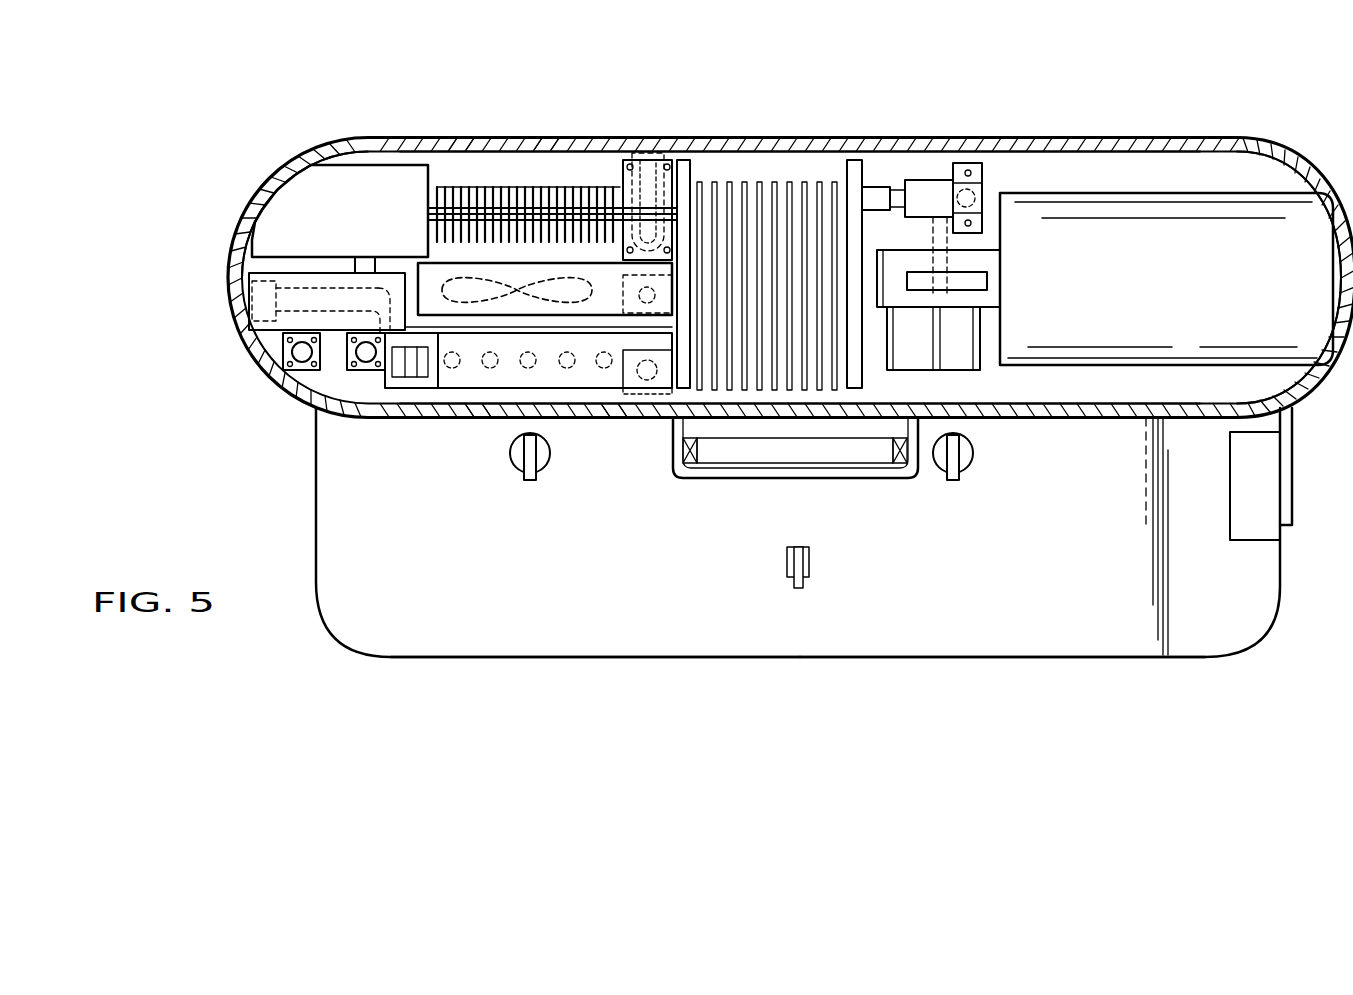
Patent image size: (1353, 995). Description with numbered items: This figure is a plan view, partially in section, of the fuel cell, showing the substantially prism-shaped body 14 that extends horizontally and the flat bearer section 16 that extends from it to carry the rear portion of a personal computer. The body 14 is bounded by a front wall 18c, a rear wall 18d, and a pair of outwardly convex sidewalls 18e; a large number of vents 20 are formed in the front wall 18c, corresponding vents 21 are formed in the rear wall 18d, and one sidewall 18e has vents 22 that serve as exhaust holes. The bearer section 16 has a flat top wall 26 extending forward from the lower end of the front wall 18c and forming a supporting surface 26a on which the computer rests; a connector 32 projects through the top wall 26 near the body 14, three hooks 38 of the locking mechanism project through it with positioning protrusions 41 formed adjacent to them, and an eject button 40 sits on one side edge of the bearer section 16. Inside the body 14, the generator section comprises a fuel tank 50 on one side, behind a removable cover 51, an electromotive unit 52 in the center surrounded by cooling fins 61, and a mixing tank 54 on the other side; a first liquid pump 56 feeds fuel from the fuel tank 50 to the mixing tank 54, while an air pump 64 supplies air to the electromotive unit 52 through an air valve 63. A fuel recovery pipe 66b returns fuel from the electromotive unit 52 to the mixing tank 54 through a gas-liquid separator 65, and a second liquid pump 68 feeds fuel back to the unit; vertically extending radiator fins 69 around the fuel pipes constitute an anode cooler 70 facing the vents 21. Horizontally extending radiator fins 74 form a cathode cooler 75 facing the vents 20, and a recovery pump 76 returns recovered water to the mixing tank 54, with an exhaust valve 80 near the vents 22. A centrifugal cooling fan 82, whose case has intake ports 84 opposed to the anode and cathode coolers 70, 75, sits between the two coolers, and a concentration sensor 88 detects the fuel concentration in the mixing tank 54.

The body 14 is at (1008, 140).
The bearer section 16 is at (697, 616).
The front wall 18c is at (1082, 420).
The rear wall 18d is at (897, 138).
The sidewalls 18e is at (292, 148).
The vents 20 is at (492, 420).
The vents 21 is at (471, 140).
The vents 22 is at (243, 226).
The top wall 26 is at (508, 650).
The supporting surface 26a is at (1030, 650).
The connector 32 is at (862, 455).
The hooks 38 is at (530, 484).
The eject button 40 is at (1246, 540).
The positioning protrusions 41 is at (546, 466).
The fuel tank 50 is at (1165, 215).
The cover 51 is at (1306, 158).
The electromotive unit 52 is at (742, 182).
The mixing tank 54 is at (365, 180).
The first liquid pump 56 is at (986, 265).
The cooling fins 61 is at (803, 186).
The air valve 63 is at (935, 184).
The air pump 64 is at (976, 338).
The gas-liquid separator 65 is at (658, 160).
The fuel recovery pipe 66b is at (517, 165).
The second liquid pump 68 is at (300, 372).
The radiator fins 69 is at (488, 190).
The anode cooler 70 is at (445, 178).
The radiator fins 74 is at (578, 396).
The cathode cooler 75 is at (461, 391).
The recovery pump 76 is at (650, 398).
The exhaust valve 80 is at (252, 297).
The cooling fan 82 is at (570, 266).
The intake ports 84 is at (413, 390).
The concentration sensor 88 is at (366, 372).